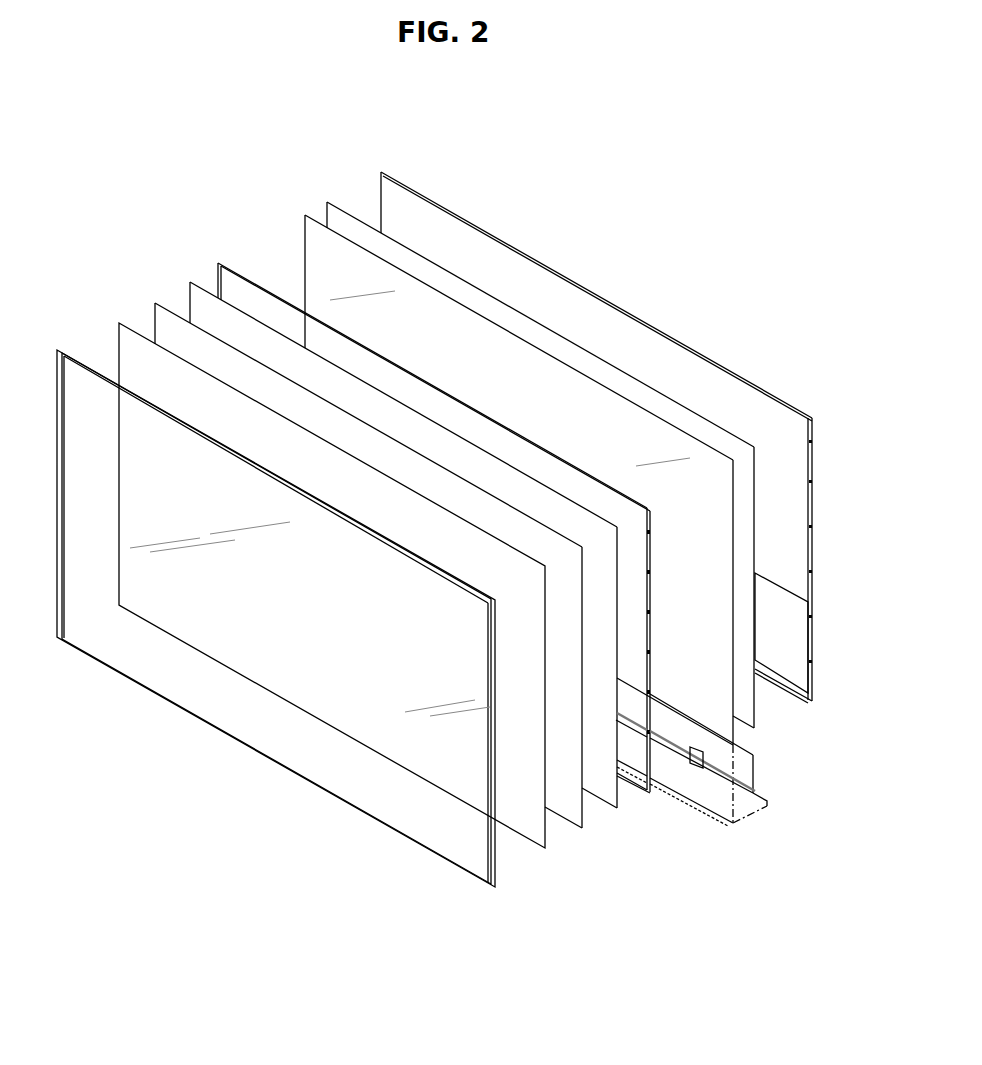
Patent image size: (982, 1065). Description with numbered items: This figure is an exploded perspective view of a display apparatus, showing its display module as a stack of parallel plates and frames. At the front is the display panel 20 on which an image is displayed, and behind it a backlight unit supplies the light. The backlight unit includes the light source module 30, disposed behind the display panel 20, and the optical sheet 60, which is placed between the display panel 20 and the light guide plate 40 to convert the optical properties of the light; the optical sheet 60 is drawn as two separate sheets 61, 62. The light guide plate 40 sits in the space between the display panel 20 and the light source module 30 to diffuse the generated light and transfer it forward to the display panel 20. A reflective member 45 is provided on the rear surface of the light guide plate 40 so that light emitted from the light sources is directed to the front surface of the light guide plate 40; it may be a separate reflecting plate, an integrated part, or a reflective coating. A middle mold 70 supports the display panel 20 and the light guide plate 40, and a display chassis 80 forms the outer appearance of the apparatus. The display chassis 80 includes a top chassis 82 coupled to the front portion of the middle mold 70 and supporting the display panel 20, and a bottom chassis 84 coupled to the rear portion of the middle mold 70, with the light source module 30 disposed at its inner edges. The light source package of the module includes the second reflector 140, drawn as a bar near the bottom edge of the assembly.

The display panel 20 is at (530, 833).
The light source module 30 is at (729, 838).
The light guide plate 40 is at (712, 462).
The reflective member 45 is at (750, 705).
The optical sheet 60 is at (642, 870).
The optical sheet 61 is at (606, 798).
The optical sheet 62 is at (571, 818).
The middle mold 70 is at (648, 792).
The display chassis 80 is at (201, 152).
The top chassis 82 is at (82, 355).
The bottom chassis 84 is at (368, 176).
The second reflector 140 is at (758, 780).